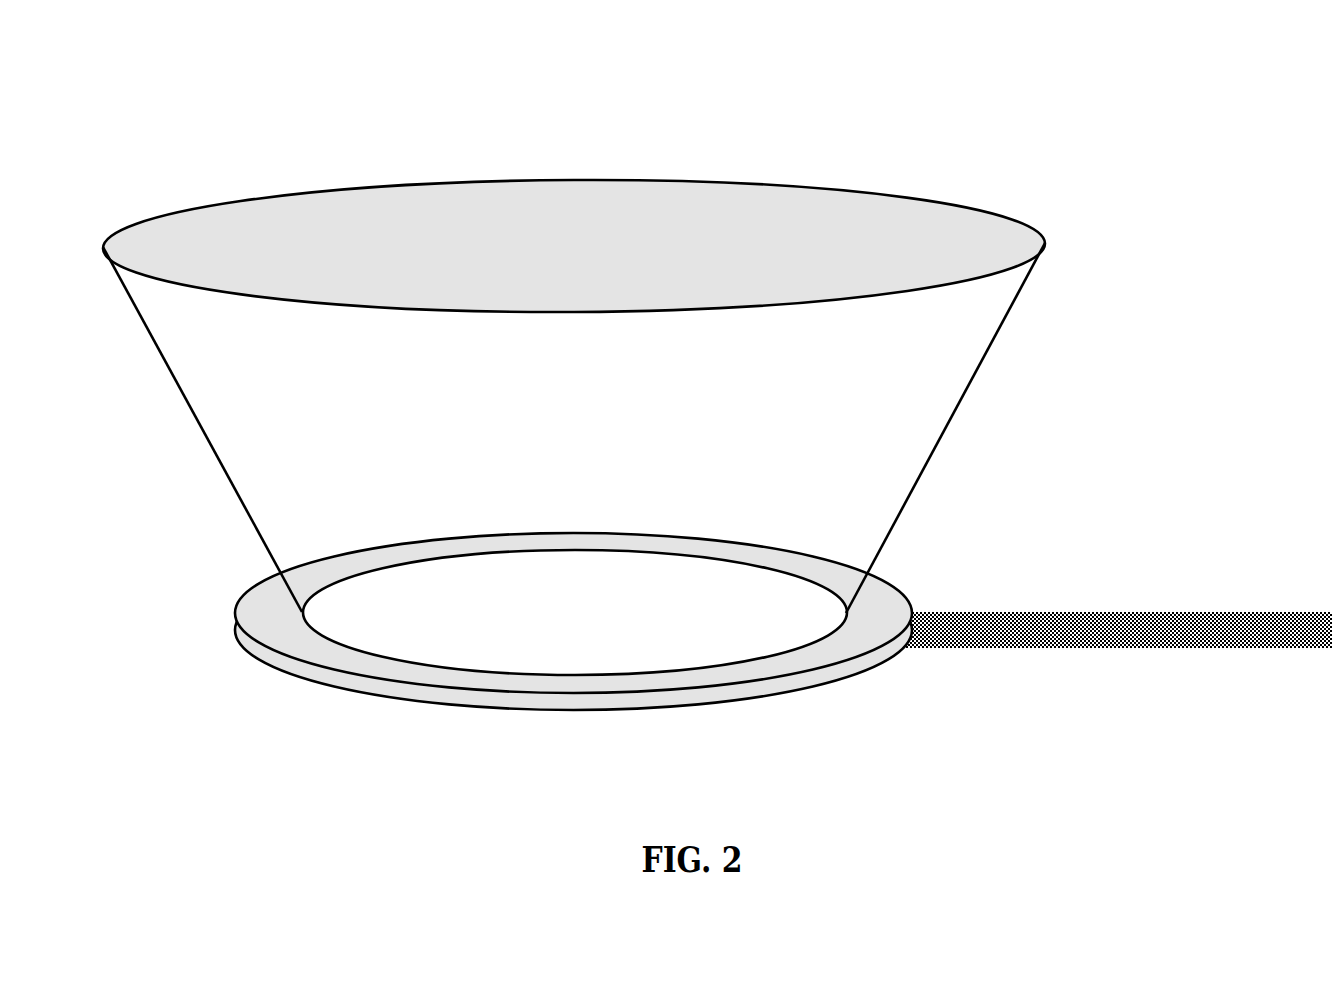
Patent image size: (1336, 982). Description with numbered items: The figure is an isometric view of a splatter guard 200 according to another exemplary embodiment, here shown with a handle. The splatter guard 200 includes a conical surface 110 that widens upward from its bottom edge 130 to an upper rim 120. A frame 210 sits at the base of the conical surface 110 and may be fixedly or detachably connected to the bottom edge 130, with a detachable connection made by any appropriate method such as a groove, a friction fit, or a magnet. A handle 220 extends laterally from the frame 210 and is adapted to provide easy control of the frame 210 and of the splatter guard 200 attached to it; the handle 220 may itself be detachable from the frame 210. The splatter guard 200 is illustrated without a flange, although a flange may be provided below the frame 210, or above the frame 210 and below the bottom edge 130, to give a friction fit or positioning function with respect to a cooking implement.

The splatter guard 200 is at (276, 102).
The conical surface 110 is at (574, 367).
The top opening 120 is at (1043, 240).
The bottom edge 130 is at (300, 612).
The frame 210 is at (297, 660).
The handle 220 is at (1160, 648).